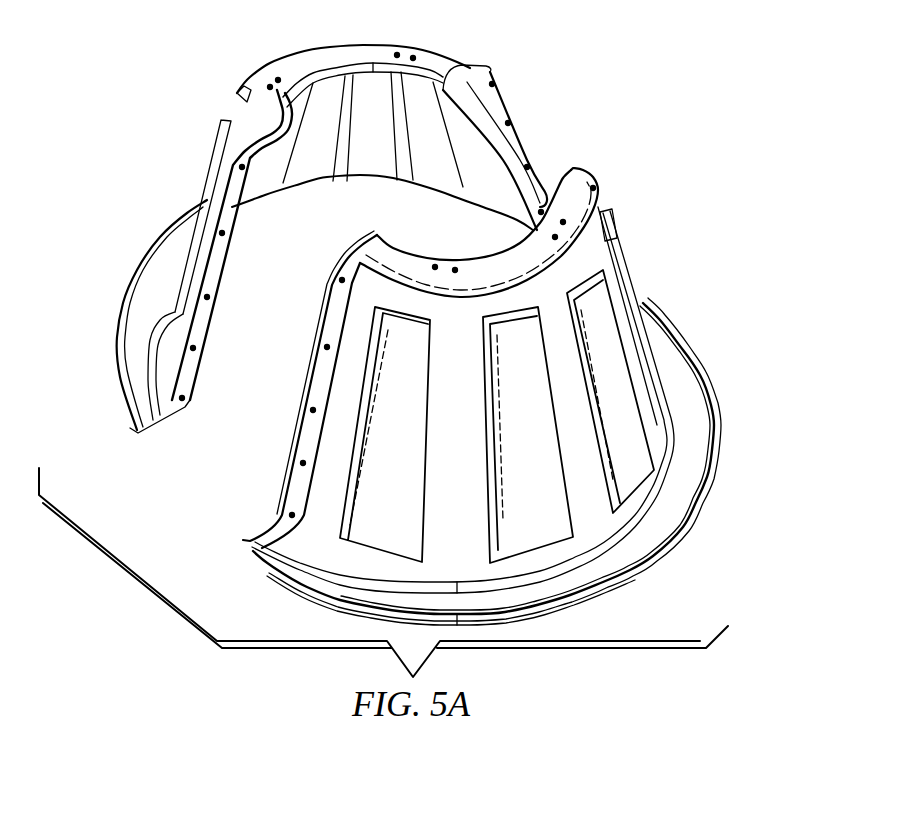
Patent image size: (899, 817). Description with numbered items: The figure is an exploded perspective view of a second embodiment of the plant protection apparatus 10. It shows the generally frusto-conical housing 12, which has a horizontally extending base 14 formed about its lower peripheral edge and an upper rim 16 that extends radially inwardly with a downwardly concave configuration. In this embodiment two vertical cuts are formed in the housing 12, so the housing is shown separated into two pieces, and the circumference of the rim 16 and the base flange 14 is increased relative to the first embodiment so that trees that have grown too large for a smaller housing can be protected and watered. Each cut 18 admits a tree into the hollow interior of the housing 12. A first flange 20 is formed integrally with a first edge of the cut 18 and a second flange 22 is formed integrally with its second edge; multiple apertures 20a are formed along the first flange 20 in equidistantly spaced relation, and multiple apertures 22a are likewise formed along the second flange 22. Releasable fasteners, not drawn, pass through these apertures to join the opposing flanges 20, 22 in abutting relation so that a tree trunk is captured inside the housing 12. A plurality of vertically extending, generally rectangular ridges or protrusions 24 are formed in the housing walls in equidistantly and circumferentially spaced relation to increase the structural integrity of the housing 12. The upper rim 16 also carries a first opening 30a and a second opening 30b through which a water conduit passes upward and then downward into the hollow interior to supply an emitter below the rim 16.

The plant protection apparatus 10 is at (716, 192).
The housing 12 is at (467, 394).
The base 14 is at (690, 437).
The upper rim 16 is at (262, 95).
The cut 18 is at (152, 438).
The first flange 20 is at (235, 185).
The apertures 20a is at (495, 84).
The second flange 22 is at (598, 182).
The apertures 22a is at (595, 189).
The ridges or protrusions 24 is at (398, 493).
The first opening 30a is at (397, 51).
The second opening 30b is at (413, 55).